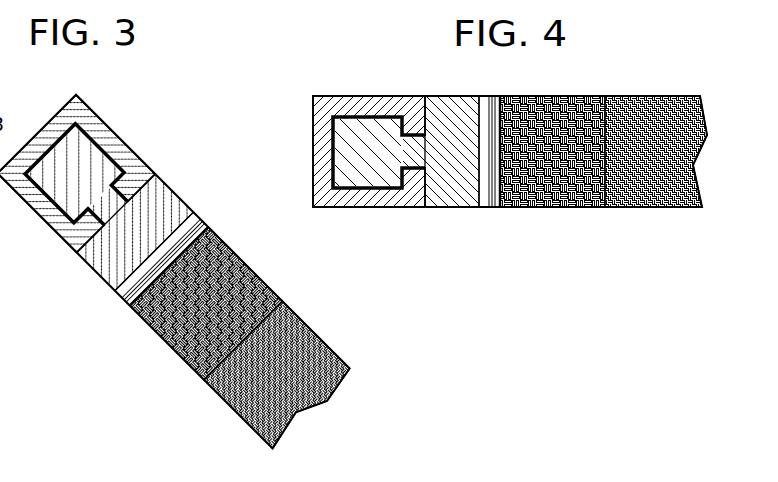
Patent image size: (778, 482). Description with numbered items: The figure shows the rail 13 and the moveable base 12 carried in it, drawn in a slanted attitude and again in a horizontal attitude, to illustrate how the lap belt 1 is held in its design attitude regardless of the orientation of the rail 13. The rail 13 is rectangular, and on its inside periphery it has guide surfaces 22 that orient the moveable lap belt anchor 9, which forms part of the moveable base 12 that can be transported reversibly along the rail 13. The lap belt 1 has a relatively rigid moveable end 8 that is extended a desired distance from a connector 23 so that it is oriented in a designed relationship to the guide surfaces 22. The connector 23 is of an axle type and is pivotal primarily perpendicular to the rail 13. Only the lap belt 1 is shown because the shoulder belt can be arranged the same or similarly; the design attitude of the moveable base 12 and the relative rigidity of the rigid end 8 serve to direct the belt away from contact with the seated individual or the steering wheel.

In FIG. 3, the lap belt 1 is at (245, 382).
In FIG. 4, the lap belt 1 is at (646, 185).
In FIG. 3, the rigid end of the lap belt 8 is at (175, 318).
In FIG. 4, the rigid end of the lap belt 8 is at (558, 165).
In FIG. 3, the moveable lap belt anchor 9 is at (102, 252).
In FIG. 4, the moveable lap belt anchor 9 is at (447, 182).
In FIG. 3, the moveable base 12 is at (50, 146).
In FIG. 4, the moveable base 12 is at (368, 148).
In FIG. 3, the rail 13 is at (140, 105).
In FIG. 4, the rail 13 is at (379, 233).
In FIG. 3, the guide surfaces 22 is at (88, 168).
In FIG. 4, the guide surfaces 22 is at (352, 183).
In FIG. 3, the connector 23 is at (121, 294).
In FIG. 4, the connector 23 is at (485, 187).